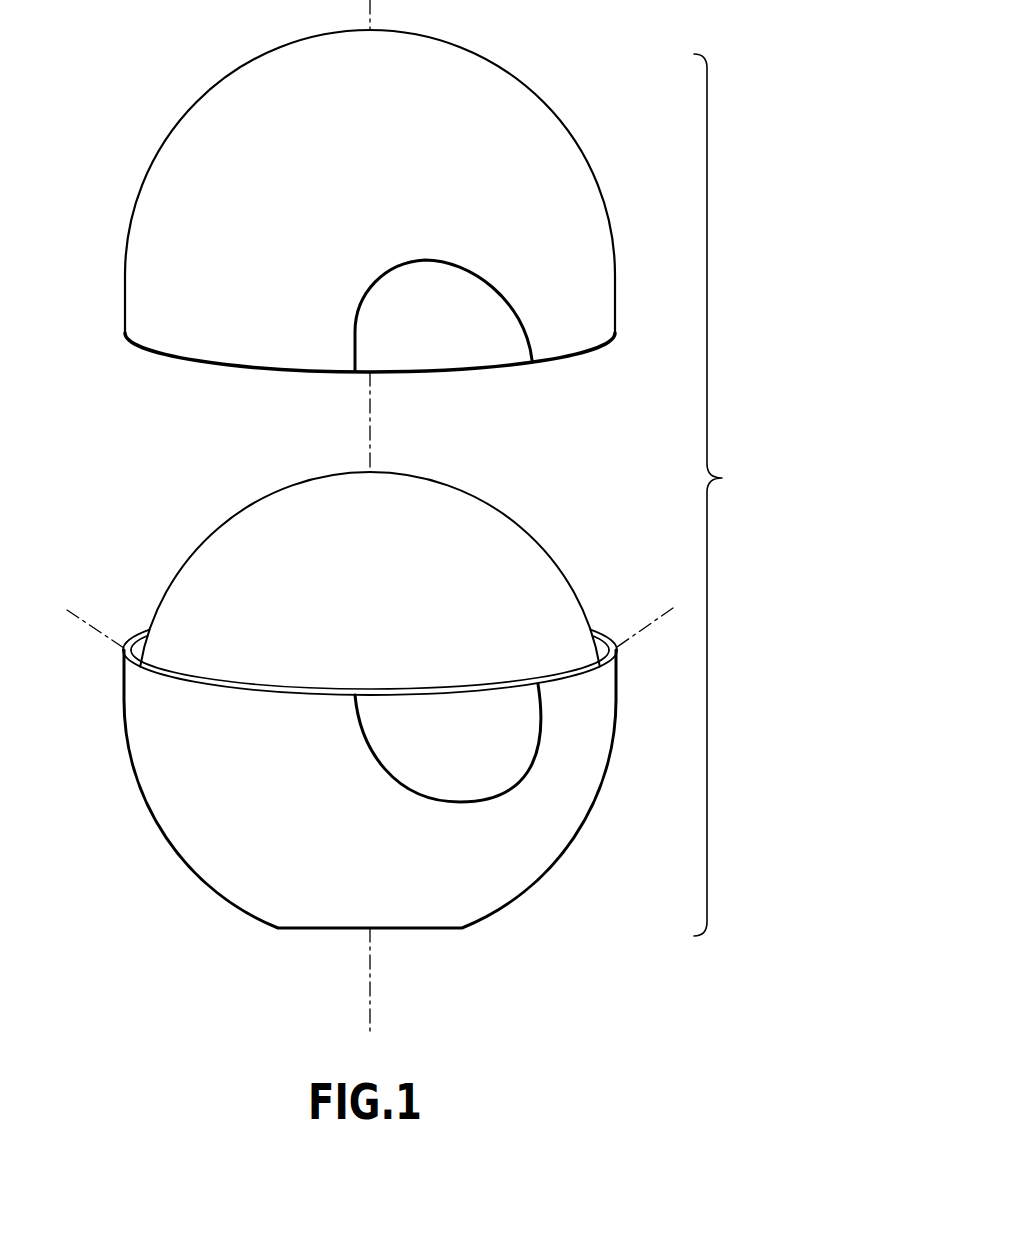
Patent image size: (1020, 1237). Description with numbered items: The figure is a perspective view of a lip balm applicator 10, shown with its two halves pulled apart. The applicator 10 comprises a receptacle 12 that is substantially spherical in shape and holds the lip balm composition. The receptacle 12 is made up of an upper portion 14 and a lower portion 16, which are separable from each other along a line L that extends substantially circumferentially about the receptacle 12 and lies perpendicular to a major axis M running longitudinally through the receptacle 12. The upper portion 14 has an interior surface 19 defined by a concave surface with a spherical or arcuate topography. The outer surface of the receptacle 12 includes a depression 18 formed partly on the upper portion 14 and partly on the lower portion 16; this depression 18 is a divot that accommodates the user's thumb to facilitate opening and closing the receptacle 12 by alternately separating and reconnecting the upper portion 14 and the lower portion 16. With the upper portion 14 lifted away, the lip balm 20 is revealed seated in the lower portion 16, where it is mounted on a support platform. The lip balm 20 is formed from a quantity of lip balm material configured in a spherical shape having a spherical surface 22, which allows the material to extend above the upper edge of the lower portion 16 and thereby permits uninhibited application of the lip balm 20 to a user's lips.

The lip balm applicator 10 is at (735, 468).
The receptacle 12 is at (116, 306).
The upper portion 14 is at (603, 197).
The lower portion 16 is at (610, 752).
The depression 18 is at (497, 342).
The interior surface 19 is at (216, 302).
The lip balm 20 is at (375, 583).
The spherical surface 22 is at (552, 597).
The line L is at (106, 637).
The major axis M is at (372, 988).